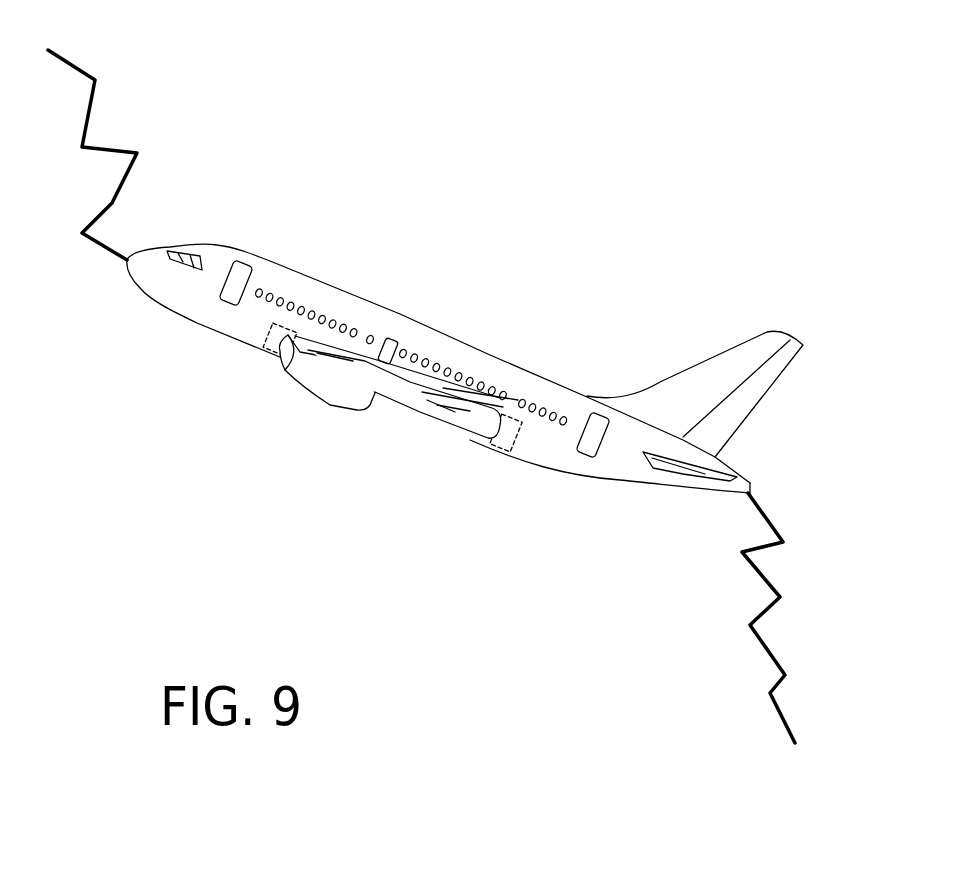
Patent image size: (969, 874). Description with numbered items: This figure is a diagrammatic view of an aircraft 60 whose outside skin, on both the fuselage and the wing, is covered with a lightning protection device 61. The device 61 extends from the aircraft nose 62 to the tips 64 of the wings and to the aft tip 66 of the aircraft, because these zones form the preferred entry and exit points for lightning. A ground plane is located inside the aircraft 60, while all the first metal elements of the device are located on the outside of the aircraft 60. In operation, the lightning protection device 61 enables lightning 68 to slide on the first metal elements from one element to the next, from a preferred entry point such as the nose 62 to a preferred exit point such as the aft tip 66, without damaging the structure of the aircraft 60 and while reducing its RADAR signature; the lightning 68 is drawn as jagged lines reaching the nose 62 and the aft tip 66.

The aircraft 60 is at (451, 368).
The lightning protection device 61 is at (220, 328).
The aircraft nose 62 is at (126, 261).
The tips of the wings 64 is at (527, 395).
The aft tip 66 is at (752, 487).
The lightning 68 is at (88, 121).